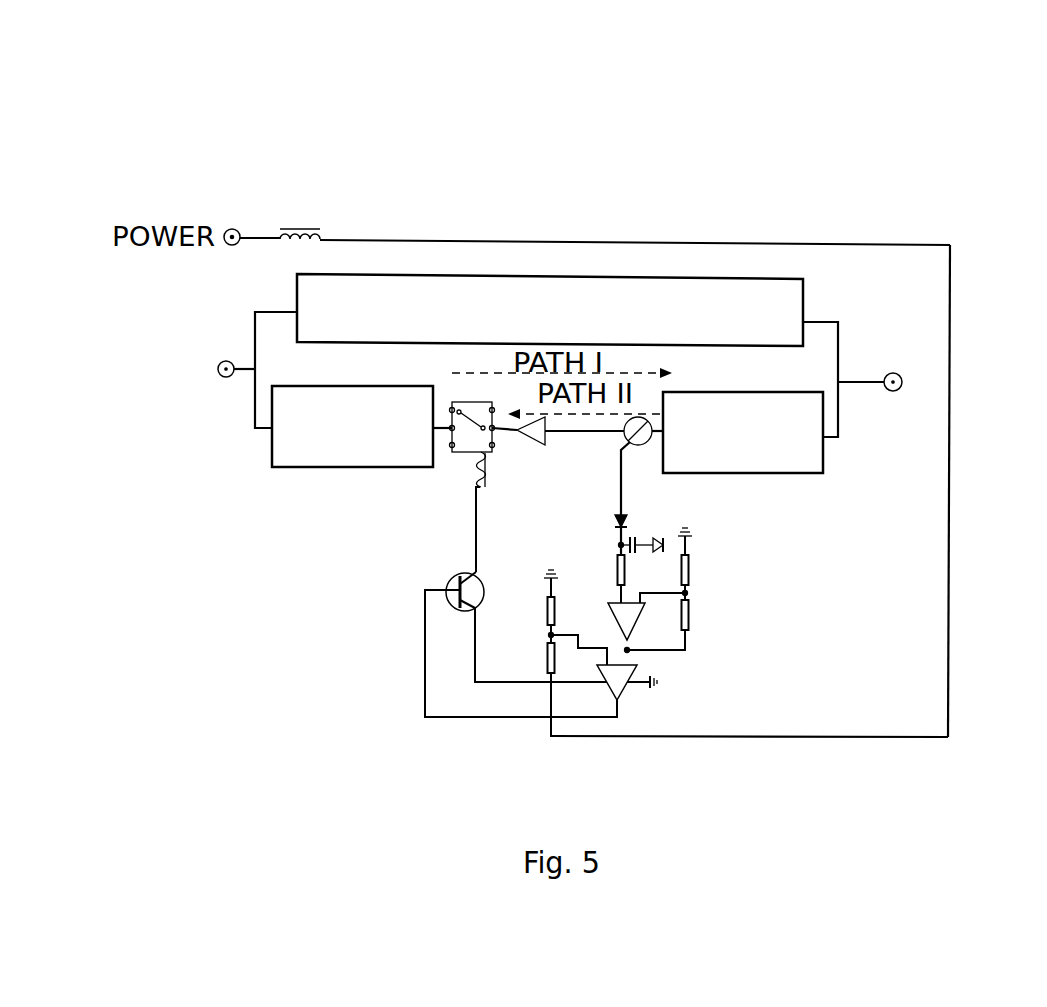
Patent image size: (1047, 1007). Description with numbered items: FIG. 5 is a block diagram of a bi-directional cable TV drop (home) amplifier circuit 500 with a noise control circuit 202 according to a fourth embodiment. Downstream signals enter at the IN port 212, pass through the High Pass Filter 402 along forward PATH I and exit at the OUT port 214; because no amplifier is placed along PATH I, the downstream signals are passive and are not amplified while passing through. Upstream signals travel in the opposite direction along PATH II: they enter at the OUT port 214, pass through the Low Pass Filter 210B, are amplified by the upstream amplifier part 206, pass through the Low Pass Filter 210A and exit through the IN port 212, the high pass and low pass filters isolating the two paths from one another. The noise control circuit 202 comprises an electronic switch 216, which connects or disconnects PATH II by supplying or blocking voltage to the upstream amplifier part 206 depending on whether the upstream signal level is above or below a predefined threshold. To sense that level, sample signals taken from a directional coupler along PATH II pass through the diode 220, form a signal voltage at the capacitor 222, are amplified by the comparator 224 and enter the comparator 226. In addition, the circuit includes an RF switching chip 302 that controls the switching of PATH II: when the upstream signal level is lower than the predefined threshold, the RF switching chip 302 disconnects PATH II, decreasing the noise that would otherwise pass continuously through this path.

The bi-directional cable TV drop (home) amplifier circuit 500 is at (579, 128).
The High Pass Filter 402 is at (438, 274).
The IN port 212 is at (218, 366).
The OUT port 214 is at (903, 380).
The Low Pass Filter 210A is at (345, 467).
The Low Pass Filter 210B is at (750, 473).
The RF switching chip 302 is at (455, 453).
The upstream amplifier part 206 is at (545, 445).
The electronic switch 216 is at (470, 574).
The diode 220 is at (612, 527).
The capacitor 222 is at (633, 555).
The comparator 224 is at (633, 625).
The comparator 226 is at (620, 693).
The noise control circuit 202 is at (366, 656).